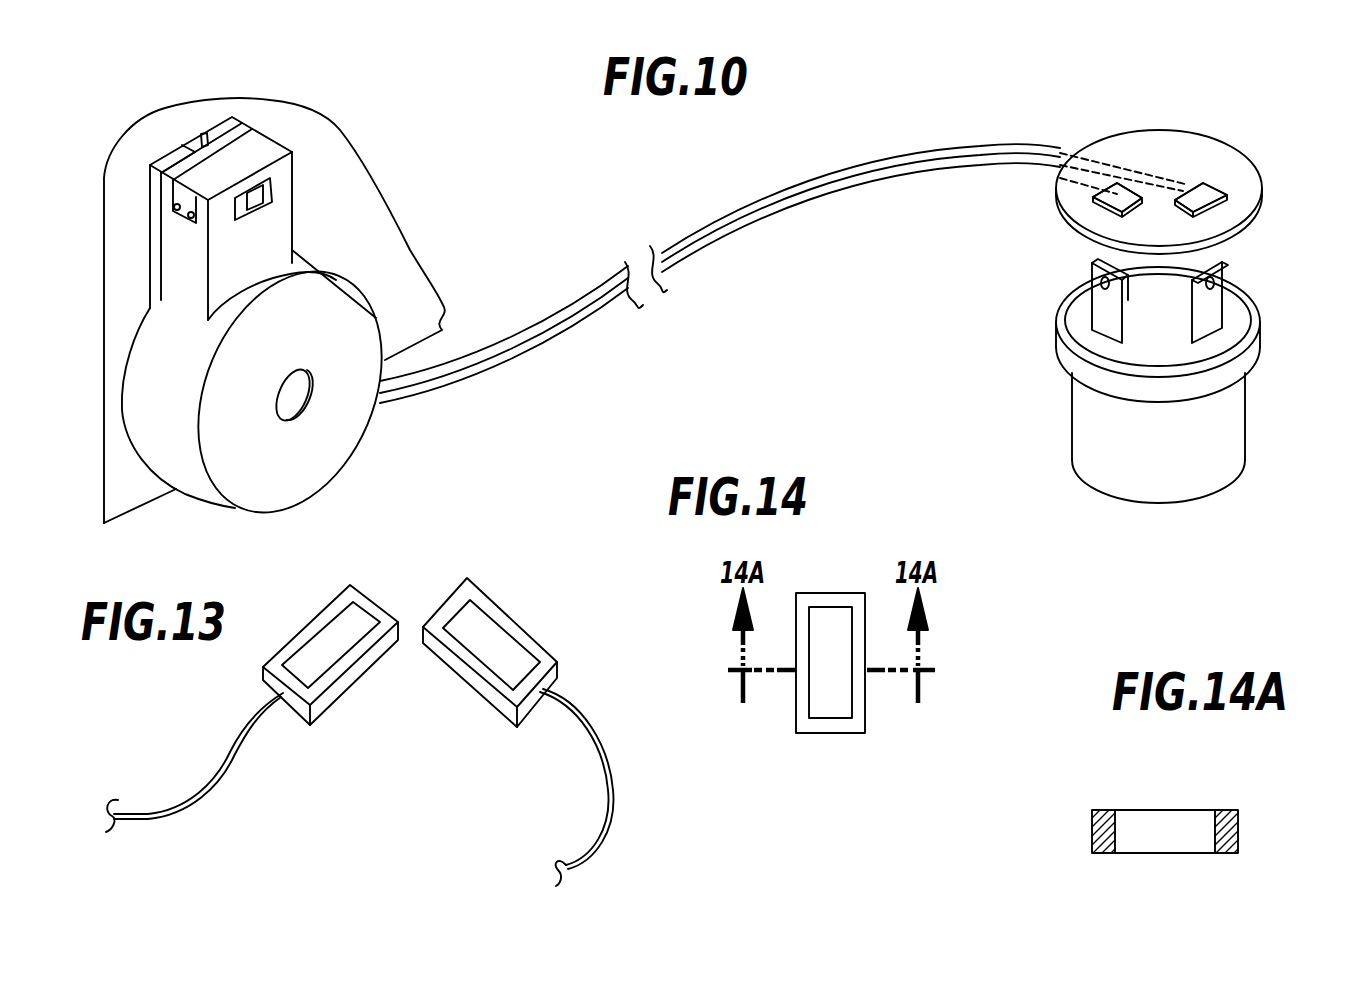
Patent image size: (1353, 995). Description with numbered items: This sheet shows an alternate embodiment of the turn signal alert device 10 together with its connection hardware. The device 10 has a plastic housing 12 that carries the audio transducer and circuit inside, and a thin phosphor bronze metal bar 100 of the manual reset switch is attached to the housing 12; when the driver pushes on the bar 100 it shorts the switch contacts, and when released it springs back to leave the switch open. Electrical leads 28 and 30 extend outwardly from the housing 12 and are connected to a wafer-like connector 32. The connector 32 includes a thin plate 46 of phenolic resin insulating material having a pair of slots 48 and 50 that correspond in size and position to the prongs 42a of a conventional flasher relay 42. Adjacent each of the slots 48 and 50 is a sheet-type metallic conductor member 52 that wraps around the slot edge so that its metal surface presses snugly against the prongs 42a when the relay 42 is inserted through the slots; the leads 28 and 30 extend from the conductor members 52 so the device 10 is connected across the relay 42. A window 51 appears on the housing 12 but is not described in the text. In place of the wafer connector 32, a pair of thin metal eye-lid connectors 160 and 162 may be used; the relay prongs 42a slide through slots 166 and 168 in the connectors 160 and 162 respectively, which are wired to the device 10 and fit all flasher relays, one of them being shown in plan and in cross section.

In FIG. 10, the turn signal alert device 10 is at (665, 291).
In FIG. 10, the housing 12 is at (200, 476).
In FIG. 10, the electrical lead 28 is at (720, 248).
In FIG. 10, the electrical lead 30 is at (897, 175).
In FIG. 10, the wafer-like connector 32 is at (1024, 210).
In FIG. 10, the flasher relay 42 is at (1230, 421).
In FIG. 10, the prongs 42a is at (1097, 315).
In FIG. 10, the thin plate 46 is at (1230, 157).
In FIG. 10, the slot 48 is at (1105, 197).
In FIG. 10, the slot 50 is at (1220, 188).
In FIG. 10, the window 51 is at (265, 188).
In FIG. 10, the conductor member 52 is at (212, 162).
In FIG. 10, the metal bar 100 is at (213, 162).
In FIG. 13, the eye-lid connector 160 is at (283, 674).
In FIG. 14, the eye-lid connector 160 is at (886, 636).
In FIG. 14A, the eye-lid connector 160 is at (1164, 806).
In FIG. 13, the eye-lid connector 162 is at (513, 721).
In FIG. 13, the slot 166 is at (320, 652).
In FIG. 14, the slot 166 is at (827, 623).
In FIG. 14A, the slot 166 is at (1180, 823).
In FIG. 13, the slot 168 is at (516, 664).